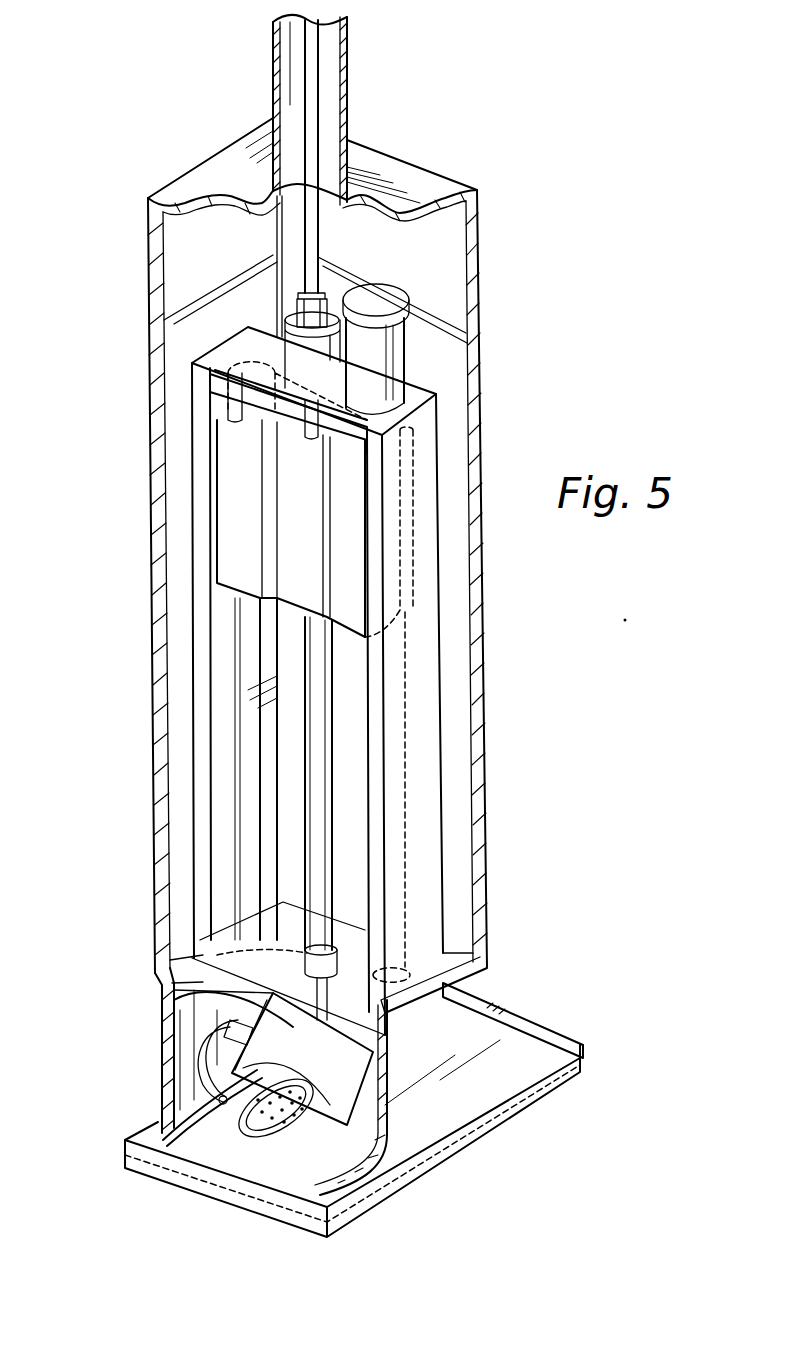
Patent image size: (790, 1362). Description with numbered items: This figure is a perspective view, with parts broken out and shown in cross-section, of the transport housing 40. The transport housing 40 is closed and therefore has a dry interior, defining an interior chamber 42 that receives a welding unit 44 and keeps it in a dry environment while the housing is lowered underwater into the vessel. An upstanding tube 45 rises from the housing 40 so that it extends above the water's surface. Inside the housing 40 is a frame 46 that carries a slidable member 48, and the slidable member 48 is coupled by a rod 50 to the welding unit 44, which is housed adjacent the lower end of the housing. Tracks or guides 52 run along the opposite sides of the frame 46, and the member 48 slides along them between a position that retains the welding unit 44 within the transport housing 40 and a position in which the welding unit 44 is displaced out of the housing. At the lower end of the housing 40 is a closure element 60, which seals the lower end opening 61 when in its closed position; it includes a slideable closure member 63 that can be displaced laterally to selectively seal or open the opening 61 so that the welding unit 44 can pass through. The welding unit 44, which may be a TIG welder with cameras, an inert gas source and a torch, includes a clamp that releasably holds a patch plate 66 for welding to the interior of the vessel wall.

The transport housing 40 is at (152, 720).
The interior chamber 42 is at (183, 607).
The welding unit 44 is at (290, 1028).
The upstanding tube 45 is at (272, 80).
The frame 46 is at (425, 745).
The slidable member 48 is at (240, 487).
The rod 50 is at (318, 820).
The tracks or guides 52 is at (270, 808).
The closure element 60 is at (465, 1100).
The lower end opening 61 is at (165, 1128).
The slideable closure member 63 is at (530, 1028).
The patch plate 66 is at (255, 1112).